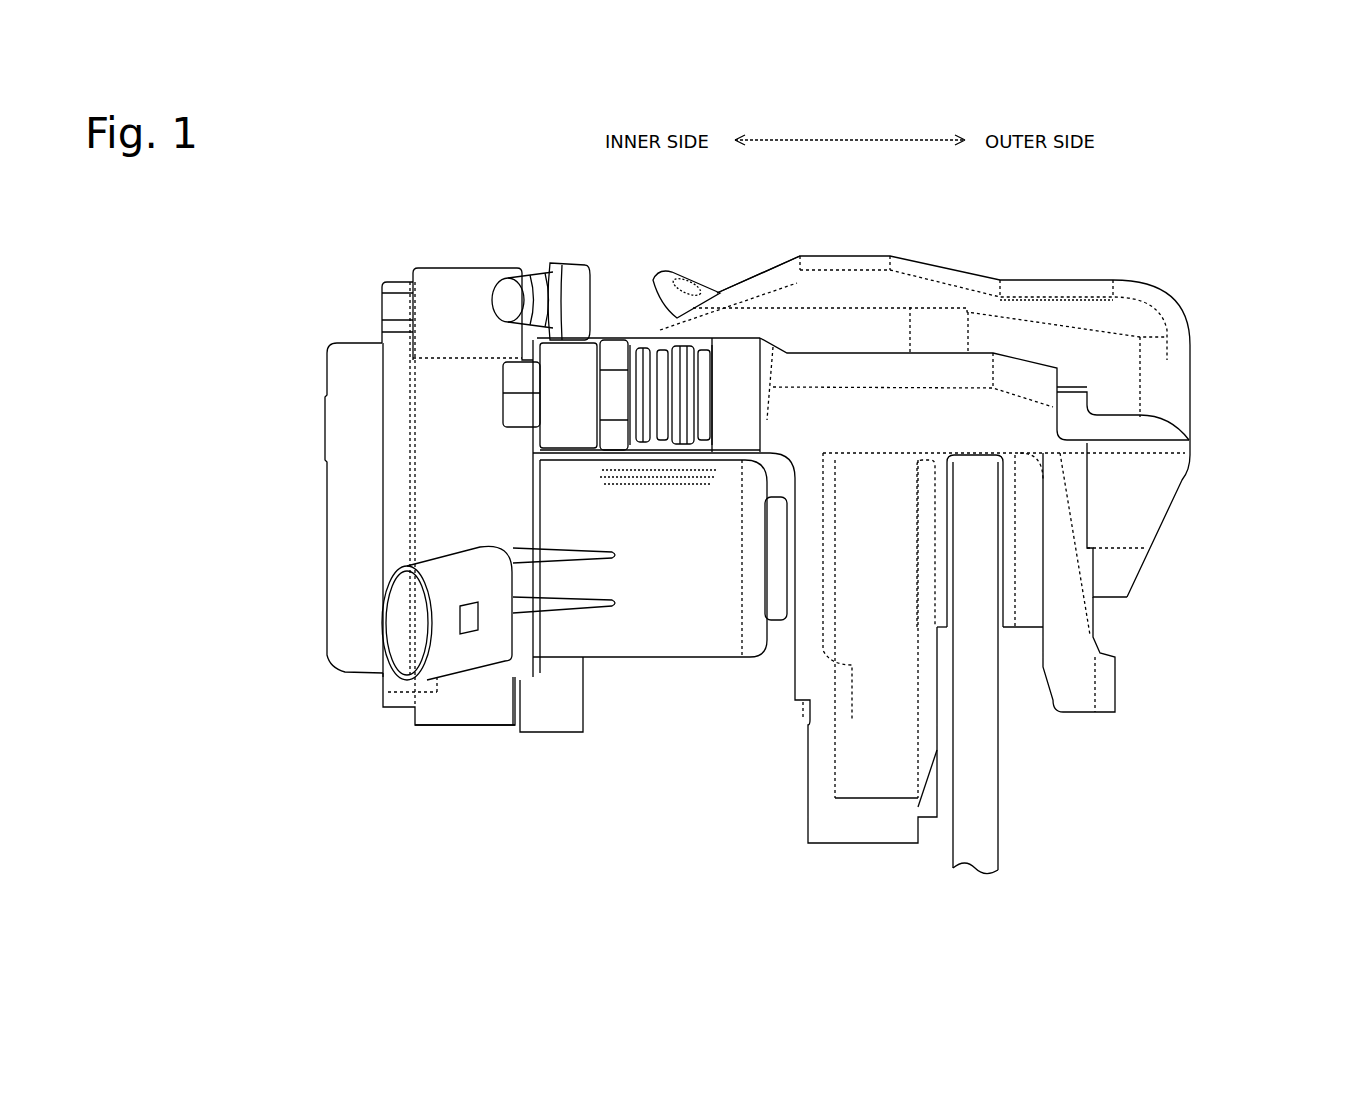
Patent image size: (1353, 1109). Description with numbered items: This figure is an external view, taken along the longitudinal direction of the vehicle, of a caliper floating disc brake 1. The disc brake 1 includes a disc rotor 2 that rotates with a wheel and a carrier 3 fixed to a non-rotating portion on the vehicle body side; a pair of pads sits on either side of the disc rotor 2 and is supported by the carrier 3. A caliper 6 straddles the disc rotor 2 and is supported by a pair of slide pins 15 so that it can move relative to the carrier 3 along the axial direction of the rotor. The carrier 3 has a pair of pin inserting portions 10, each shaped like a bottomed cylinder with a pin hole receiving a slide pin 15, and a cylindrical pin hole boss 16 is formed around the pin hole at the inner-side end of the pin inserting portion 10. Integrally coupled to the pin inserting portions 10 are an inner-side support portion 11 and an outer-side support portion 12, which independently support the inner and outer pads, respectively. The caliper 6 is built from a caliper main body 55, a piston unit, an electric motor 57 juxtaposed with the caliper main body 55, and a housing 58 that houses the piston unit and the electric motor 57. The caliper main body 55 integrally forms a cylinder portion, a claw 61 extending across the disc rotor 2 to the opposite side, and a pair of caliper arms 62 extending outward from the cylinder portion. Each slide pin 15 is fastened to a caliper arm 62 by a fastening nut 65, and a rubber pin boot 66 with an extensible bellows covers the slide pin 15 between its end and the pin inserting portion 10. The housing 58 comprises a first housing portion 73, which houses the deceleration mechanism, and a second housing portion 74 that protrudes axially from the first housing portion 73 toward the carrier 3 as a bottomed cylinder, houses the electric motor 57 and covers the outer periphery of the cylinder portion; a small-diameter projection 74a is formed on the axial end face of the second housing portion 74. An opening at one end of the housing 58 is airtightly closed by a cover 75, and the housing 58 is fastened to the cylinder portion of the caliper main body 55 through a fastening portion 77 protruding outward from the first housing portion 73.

The disc brake 1 is at (1222, 285).
The disc rotor 2 is at (983, 830).
The carrier 3 is at (1095, 718).
The caliper 6 is at (1080, 280).
The pin inserting portion 10 is at (818, 363).
The inner-side support portion 11 is at (857, 813).
The outer-side support portion 12 is at (1085, 679).
The slide pin 15 is at (840, 377).
The pin hole boss 16 is at (750, 352).
The caliper main body 55 is at (975, 300).
The electric motor 57 is at (672, 600).
The housing 58 is at (450, 728).
The claw 61 is at (1155, 500).
The caliper arm 62 is at (583, 355).
The fastening nut 65 is at (512, 378).
The pin boot 66 is at (665, 345).
The first housing portion 73 is at (492, 710).
The second housing portion 74 is at (625, 642).
The small-diameter projection 74a is at (773, 647).
The cover 75 is at (340, 638).
The fastening portion 77 is at (462, 290).